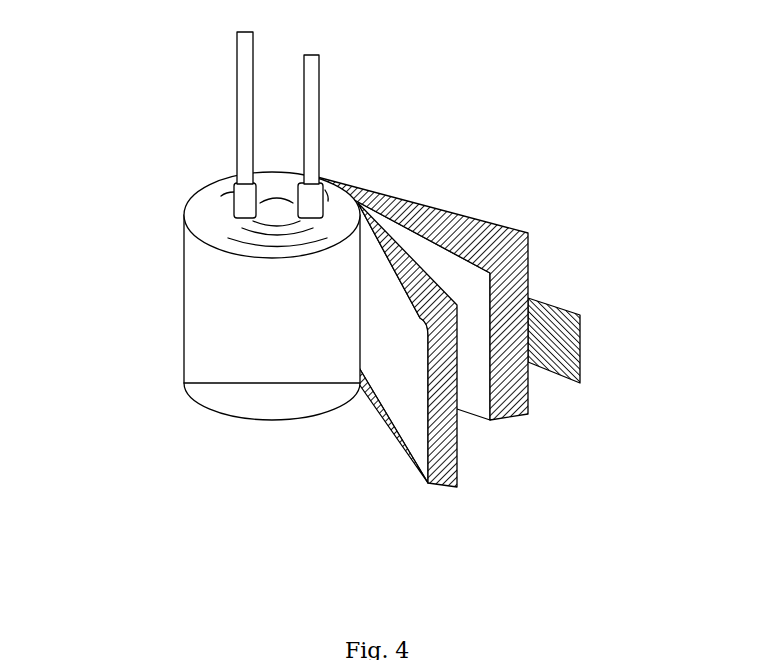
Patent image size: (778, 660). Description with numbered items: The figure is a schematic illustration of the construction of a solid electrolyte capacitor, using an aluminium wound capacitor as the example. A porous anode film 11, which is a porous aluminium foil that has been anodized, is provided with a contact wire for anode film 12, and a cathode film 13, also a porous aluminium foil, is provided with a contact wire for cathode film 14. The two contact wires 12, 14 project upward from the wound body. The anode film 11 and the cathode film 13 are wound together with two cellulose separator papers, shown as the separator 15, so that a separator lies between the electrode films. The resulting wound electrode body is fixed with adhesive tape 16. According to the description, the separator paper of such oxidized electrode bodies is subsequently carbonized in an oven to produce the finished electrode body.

The porous anode film 11 is at (397, 383).
The contact wire for anode film 12 is at (237, 100).
The cathode film 13 is at (470, 392).
The contact wire for cathode film 14 is at (320, 75).
The separator 15 is at (397, 240).
The adhesive tape 16 is at (568, 340).